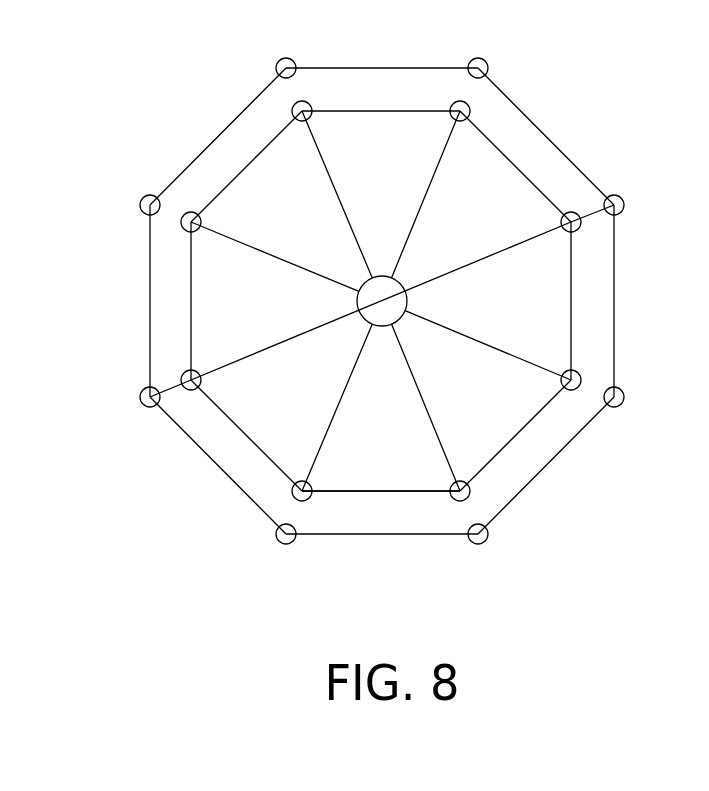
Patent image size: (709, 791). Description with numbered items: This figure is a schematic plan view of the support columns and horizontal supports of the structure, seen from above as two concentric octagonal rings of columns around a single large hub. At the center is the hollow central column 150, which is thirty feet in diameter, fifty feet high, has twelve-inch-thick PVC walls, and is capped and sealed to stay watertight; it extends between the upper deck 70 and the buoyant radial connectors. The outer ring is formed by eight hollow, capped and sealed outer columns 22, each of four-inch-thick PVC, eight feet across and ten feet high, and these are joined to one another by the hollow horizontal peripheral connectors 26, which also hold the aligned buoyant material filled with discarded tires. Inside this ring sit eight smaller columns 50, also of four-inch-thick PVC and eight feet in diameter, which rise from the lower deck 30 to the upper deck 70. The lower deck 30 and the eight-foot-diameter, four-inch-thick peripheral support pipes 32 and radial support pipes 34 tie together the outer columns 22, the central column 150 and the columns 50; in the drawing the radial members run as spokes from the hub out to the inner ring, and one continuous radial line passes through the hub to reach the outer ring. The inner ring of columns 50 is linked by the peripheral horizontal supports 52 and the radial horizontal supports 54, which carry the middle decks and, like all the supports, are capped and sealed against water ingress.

The outer columns 22 is at (280, 60).
The horizontal peripheral and radial connectors 26 is at (408, 537).
The lower deck 30 is at (546, 448).
The peripheral support pipes 32 is at (520, 495).
The radial support pipes 34 is at (164, 391).
The columns 50 is at (293, 110).
The peripheral horizontal supports 52 is at (425, 495).
The radial horizontal supports 54 is at (435, 443).
The upper deck 70 is at (364, 482).
The central column 150 is at (386, 268).